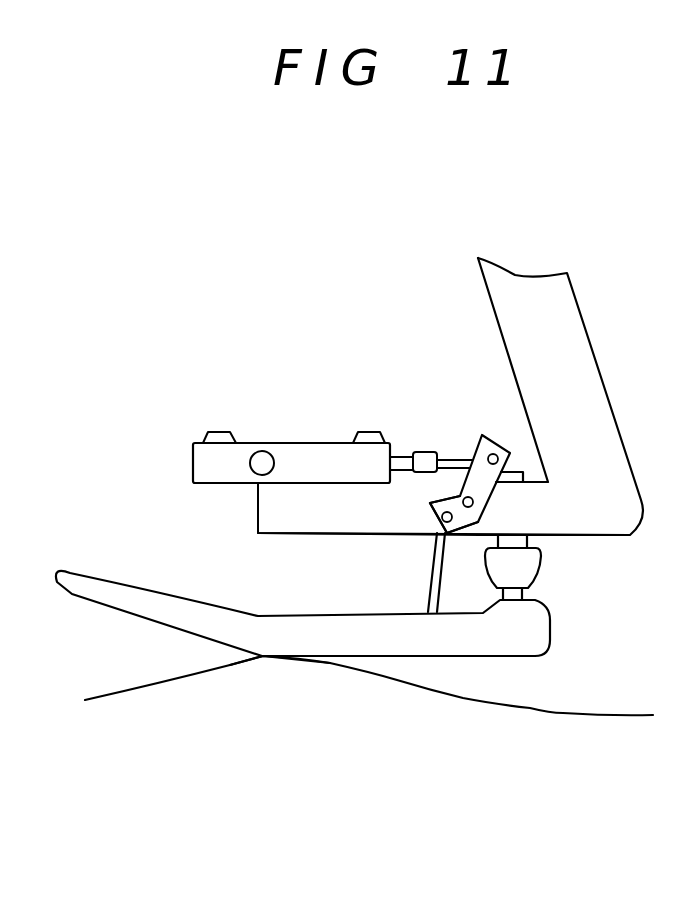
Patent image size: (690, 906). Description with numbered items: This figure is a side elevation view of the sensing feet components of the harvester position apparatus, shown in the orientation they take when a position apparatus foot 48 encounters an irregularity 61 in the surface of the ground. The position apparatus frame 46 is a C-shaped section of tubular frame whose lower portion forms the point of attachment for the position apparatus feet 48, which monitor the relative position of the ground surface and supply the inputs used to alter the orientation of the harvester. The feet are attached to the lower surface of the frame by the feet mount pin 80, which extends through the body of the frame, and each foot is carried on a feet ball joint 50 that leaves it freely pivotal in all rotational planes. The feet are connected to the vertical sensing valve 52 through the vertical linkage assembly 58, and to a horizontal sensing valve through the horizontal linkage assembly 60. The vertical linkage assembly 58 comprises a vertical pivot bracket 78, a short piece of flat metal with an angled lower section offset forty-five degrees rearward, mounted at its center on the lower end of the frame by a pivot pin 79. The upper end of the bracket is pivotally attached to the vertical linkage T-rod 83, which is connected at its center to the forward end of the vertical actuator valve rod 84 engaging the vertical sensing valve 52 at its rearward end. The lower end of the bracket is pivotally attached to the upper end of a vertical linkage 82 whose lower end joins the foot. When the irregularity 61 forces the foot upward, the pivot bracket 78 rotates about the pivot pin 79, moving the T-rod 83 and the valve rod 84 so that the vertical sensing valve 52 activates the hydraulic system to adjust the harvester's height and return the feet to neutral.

The position apparatus frame 46 is at (505, 280).
The position apparatus feet 48 is at (538, 627).
The feet ball joint 50 is at (540, 567).
The vertical sensing valve 52 is at (330, 443).
The vertical linkage assembly 58 is at (503, 435).
The horizontal linkage assembly 60 is at (545, 712).
The irregularity 61 is at (283, 657).
The vertical pivot bracket 78 is at (460, 486).
The pivot pin 79 is at (430, 503).
The feet mount pin 80 is at (523, 470).
The vertical linkage 82 is at (428, 571).
The vertical linkage T-rod 83 is at (483, 436).
The vertical actuator valve rod 84 is at (442, 452).